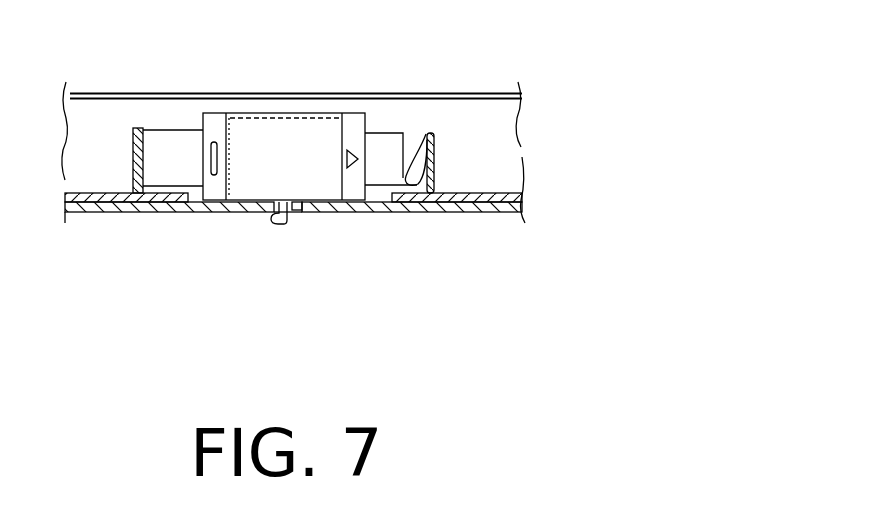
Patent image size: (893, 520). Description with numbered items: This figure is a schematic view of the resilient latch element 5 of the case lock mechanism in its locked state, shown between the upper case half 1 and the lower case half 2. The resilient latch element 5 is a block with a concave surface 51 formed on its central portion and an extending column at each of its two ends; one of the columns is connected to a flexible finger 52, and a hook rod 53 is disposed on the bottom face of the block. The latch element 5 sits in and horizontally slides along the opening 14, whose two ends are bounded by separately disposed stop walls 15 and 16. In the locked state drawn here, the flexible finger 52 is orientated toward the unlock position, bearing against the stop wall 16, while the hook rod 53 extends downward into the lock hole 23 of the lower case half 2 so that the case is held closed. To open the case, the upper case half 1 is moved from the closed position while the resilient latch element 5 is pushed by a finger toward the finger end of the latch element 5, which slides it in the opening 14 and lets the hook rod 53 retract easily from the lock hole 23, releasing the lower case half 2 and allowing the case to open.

The upper case half 1 is at (138, 102).
The lower case half 2 is at (118, 212).
The resilient latch element 5 is at (293, 122).
The opening 14 is at (188, 203).
The stop wall 15 is at (138, 155).
The stop wall 16 is at (435, 158).
The lock hole 23 is at (293, 213).
The concave surface 51 is at (258, 178).
The flexible finger 52 is at (419, 133).
The hook rod 53 is at (282, 221).